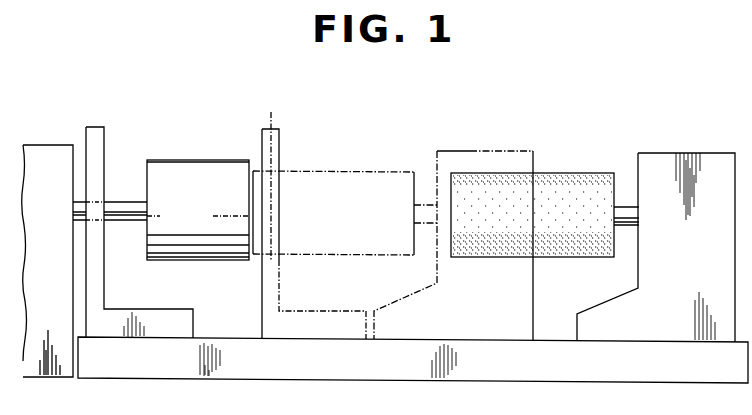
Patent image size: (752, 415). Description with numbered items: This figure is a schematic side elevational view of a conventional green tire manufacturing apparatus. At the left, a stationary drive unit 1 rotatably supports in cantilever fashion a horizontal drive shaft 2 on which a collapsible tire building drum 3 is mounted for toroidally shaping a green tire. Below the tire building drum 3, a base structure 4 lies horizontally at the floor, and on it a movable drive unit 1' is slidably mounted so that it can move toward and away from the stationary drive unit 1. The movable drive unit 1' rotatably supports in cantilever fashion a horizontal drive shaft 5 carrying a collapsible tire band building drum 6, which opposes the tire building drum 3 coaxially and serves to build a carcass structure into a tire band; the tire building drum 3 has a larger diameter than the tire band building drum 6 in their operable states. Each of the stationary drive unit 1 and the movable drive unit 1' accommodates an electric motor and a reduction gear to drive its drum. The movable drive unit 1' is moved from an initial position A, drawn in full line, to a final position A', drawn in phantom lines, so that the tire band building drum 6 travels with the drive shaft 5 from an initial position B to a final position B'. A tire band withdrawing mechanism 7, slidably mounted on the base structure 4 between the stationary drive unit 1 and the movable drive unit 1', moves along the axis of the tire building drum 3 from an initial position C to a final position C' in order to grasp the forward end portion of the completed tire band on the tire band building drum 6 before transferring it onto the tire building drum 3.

The stationary drive unit 1 is at (47, 242).
The movable drive unit 1' is at (656, 228).
The horizontal drive shaft 2 is at (125, 203).
The collapsible tire building drum 3 is at (203, 170).
The base structure 4 is at (554, 352).
The horizontal drive shaft 5 is at (628, 210).
The collapsible tire band building drum 6 is at (598, 180).
The tire band withdrawing mechanism 7 is at (97, 141).
The initial position A is at (686, 223).
The final position A' is at (453, 222).
The initial position B is at (532, 194).
The final position B' is at (345, 191).
The initial position C is at (95, 189).
The final position C' is at (314, 208).